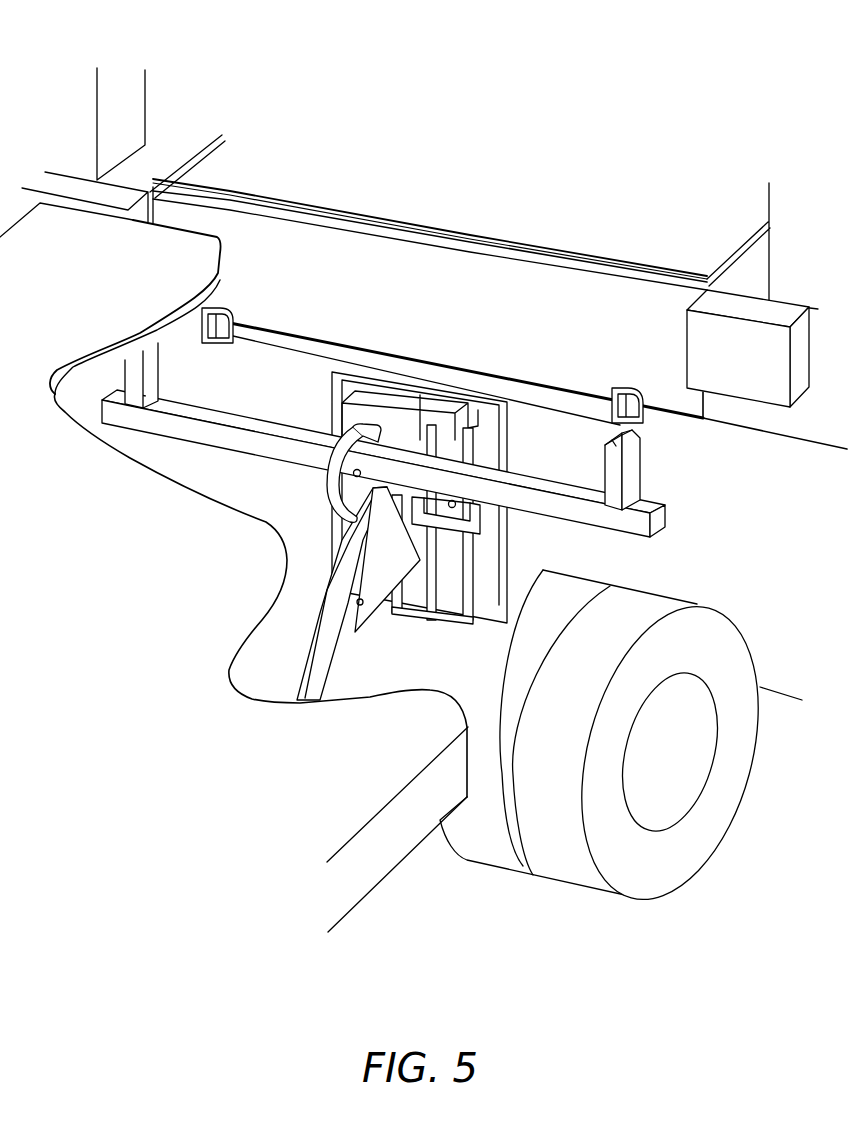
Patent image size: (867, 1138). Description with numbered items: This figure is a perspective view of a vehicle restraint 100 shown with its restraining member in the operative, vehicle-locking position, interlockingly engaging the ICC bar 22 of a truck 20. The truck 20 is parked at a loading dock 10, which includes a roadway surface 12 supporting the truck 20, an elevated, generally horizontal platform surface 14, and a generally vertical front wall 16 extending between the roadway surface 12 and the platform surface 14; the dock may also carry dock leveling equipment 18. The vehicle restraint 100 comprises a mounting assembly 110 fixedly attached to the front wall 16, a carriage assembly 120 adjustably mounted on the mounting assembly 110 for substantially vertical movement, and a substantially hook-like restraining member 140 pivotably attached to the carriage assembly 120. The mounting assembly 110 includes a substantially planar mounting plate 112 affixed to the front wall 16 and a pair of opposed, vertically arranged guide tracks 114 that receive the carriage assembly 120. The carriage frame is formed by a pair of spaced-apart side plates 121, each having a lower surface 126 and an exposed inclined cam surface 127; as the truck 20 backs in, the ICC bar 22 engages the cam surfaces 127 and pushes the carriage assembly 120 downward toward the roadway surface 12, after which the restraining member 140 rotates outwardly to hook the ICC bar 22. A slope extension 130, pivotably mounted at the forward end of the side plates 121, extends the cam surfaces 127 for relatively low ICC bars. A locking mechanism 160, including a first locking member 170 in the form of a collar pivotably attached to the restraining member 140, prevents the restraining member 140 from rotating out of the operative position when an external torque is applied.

The loading dock 10 is at (346, 92).
The roadway surface 12 is at (552, 758).
The platform surface 14 is at (548, 153).
The front wall 16 is at (838, 558).
The dock leveling equipment 18 is at (403, 308).
The truck 20 is at (338, 798).
The ICC bar 22 is at (198, 436).
The vehicle restraint 100 is at (356, 510).
The mounting assembly 110 is at (442, 627).
The mounting plate 112 is at (341, 387).
The guide tracks 114 is at (440, 573).
The carriage assembly 120 is at (387, 593).
The side plates 121 is at (380, 553).
The lower surface 126 is at (357, 634).
The cam surface 127 is at (338, 558).
The slope extension 130 is at (312, 670).
The restraining member 140 is at (327, 484).
The locking mechanism 160 is at (382, 432).
The first locking member 170 is at (350, 487).